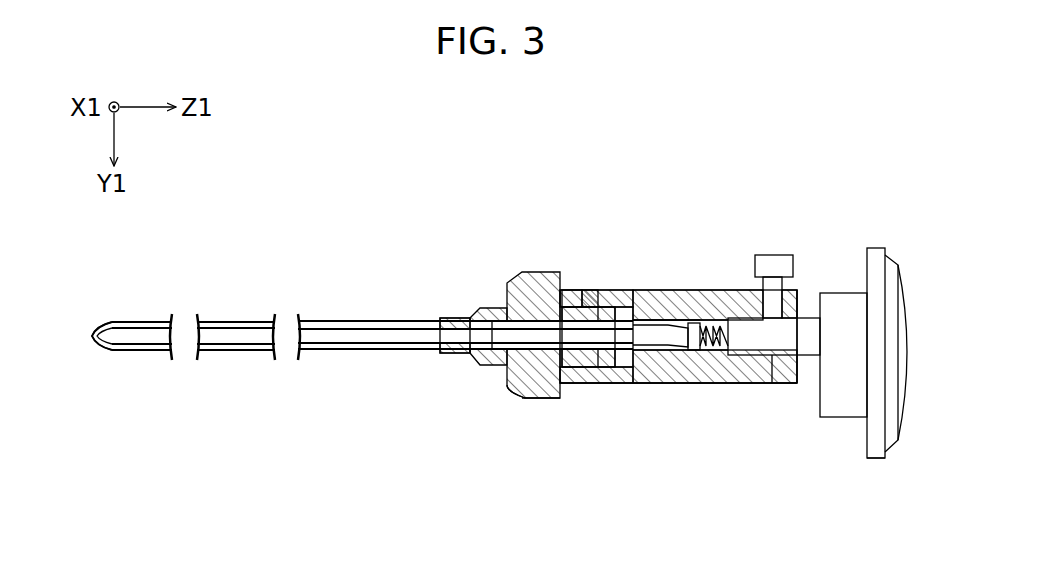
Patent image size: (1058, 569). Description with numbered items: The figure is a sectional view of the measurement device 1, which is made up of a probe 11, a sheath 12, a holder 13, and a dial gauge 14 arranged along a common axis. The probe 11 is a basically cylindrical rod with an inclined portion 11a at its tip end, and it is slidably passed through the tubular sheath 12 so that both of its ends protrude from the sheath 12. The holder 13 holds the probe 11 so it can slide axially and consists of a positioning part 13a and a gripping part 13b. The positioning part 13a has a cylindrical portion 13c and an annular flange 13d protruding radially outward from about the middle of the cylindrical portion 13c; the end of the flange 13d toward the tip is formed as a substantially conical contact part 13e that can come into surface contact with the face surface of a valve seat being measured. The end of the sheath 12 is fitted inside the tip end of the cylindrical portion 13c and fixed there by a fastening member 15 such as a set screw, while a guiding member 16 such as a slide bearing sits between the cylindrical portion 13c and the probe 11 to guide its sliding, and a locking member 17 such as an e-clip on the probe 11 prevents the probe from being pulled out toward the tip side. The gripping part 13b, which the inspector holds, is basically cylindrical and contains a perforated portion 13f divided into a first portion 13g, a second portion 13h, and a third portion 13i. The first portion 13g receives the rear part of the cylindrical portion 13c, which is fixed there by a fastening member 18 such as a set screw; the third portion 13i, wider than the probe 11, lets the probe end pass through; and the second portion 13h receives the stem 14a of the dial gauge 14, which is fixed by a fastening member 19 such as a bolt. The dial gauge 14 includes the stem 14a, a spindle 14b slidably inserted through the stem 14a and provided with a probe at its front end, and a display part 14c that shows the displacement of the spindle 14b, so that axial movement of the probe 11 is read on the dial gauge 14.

The measurement device 1 is at (878, 152).
The probe 11 is at (222, 345).
The inclined portion 11a is at (95, 338).
The sheath 12 is at (340, 351).
The holder 13 is at (698, 386).
The positioning part 13a is at (540, 402).
The gripping part 13b is at (748, 386).
The cylindrical portion 13c is at (572, 290).
The flange 13d is at (541, 270).
The contact part 13e is at (515, 397).
The perforated portion 13f is at (664, 318).
The first portion 13g is at (576, 384).
The second portion 13h is at (772, 382).
The third portion 13i is at (648, 384).
The dial gauge 14 is at (908, 264).
The stem 14a is at (745, 319).
The spindle 14b is at (697, 323).
The display part 14c is at (876, 460).
The fastening member 15 is at (478, 316).
The guiding member 16 is at (492, 364).
The locking member 17 is at (623, 368).
The fastening member 18 is at (590, 290).
The fastening member 19 is at (783, 256).